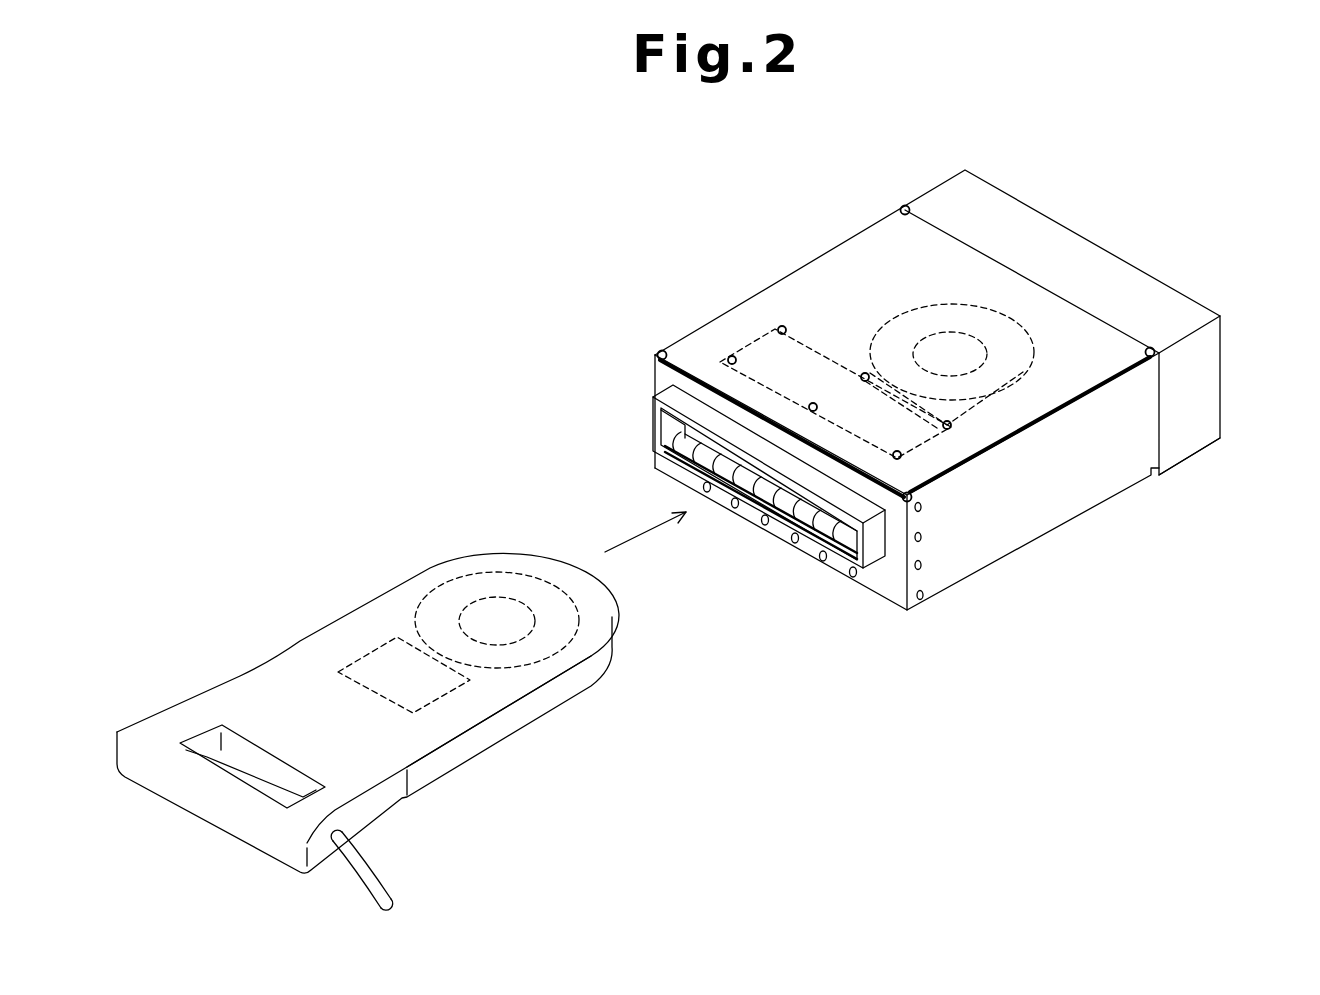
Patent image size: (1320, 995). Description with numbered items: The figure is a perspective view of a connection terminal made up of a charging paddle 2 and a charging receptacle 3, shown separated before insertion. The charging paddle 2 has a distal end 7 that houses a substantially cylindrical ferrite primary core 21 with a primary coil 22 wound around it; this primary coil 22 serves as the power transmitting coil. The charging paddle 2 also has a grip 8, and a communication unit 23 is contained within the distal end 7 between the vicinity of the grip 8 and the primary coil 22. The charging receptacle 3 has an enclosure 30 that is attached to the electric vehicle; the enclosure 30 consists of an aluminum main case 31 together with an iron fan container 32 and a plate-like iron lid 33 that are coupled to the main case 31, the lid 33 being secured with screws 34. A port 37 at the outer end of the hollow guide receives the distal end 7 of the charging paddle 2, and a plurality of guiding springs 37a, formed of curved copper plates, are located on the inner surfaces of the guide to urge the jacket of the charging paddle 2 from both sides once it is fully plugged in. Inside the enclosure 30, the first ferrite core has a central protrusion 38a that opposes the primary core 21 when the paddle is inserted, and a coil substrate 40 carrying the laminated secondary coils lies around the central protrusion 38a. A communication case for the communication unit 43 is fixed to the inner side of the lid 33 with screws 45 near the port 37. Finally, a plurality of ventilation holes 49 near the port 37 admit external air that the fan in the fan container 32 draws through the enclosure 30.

The charging paddle 2 is at (334, 649).
The charging receptacle 3 is at (792, 263).
The distal end 7 is at (507, 693).
The grip 8 is at (195, 797).
The primary core 21 is at (483, 610).
The primary coil 22 is at (563, 633).
The communication unit 23 is at (433, 700).
The enclosure 30 is at (1117, 490).
The main case 31 is at (1058, 503).
The fan container 32 is at (1216, 405).
The lid 33 is at (1053, 409).
The screws 34 is at (904, 209).
The port 37 is at (667, 423).
The guiding springs 37a is at (812, 520).
The central protrusion 38a is at (1023, 372).
The coil substrate 40 is at (1020, 336).
The communication unit 43 is at (750, 335).
The screws 45 is at (903, 456).
The ventilation holes 49 is at (855, 578).